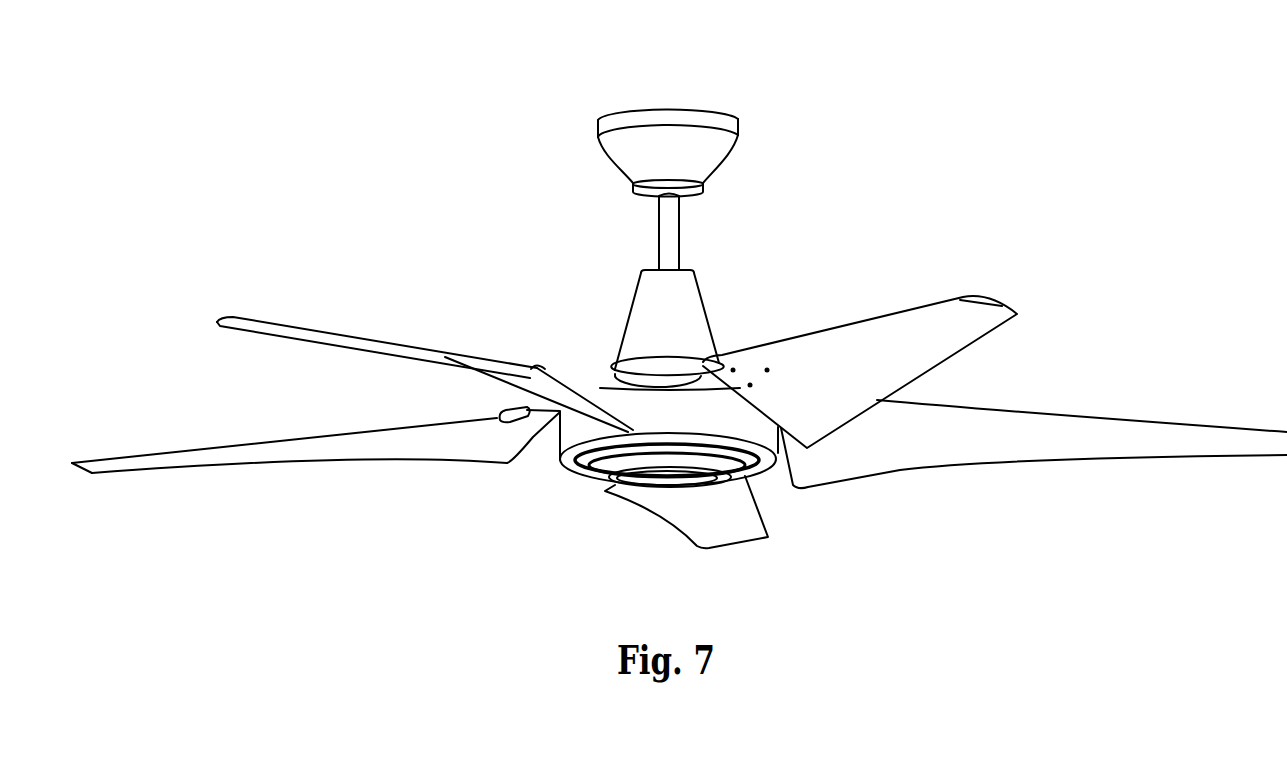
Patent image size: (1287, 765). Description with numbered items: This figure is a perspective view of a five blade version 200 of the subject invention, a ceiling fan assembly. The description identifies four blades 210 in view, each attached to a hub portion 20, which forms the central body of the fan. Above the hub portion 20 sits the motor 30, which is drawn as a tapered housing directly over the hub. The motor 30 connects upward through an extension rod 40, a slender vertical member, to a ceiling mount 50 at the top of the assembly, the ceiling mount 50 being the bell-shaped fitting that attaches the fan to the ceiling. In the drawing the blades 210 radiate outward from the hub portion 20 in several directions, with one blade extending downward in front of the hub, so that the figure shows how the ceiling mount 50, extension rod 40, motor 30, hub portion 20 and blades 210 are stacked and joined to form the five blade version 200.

The five blade version 200 is at (460, 202).
The ceiling mount 50 is at (702, 150).
The extension rod 40 is at (668, 242).
The motor 30 is at (695, 315).
The hub portion 20 is at (687, 425).
The blades 210 is at (355, 363).